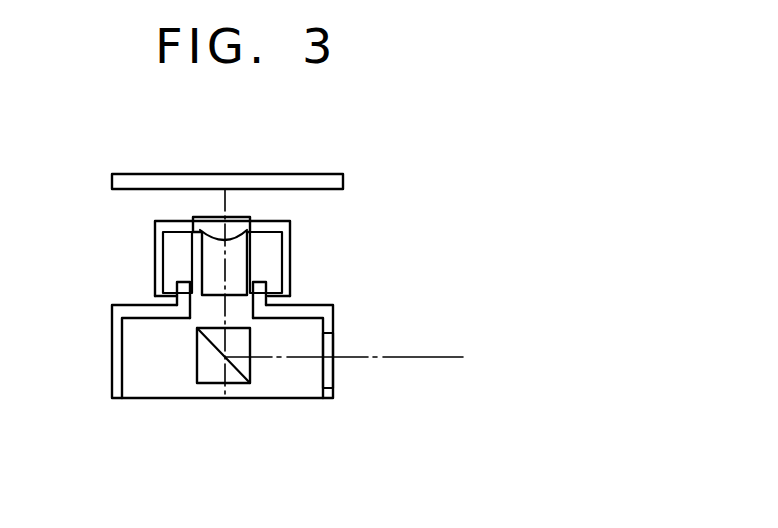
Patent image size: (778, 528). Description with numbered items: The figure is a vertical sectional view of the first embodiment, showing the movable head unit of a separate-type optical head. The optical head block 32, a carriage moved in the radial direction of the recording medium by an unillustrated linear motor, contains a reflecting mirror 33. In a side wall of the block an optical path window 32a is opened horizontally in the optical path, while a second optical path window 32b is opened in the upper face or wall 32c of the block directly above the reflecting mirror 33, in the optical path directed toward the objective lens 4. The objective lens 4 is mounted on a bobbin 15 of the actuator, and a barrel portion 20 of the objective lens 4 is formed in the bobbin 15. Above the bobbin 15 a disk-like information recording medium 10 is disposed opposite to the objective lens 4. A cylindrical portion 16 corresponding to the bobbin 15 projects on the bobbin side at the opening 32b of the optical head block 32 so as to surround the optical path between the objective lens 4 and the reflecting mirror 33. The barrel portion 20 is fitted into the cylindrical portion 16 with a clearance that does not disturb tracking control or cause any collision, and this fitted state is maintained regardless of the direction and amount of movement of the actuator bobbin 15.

The disk-like information recording medium 10 is at (330, 175).
The objective lens 4 is at (250, 216).
The bobbin 15 is at (290, 258).
The cylindrical portion 16 is at (267, 303).
The barrel portion 20 is at (192, 266).
The optical head block 32 is at (113, 355).
The optical path window 32a is at (333, 372).
The optical path window 32b is at (210, 308).
The upper face or wall 32c is at (240, 319).
The reflecting mirror 33 is at (225, 398).